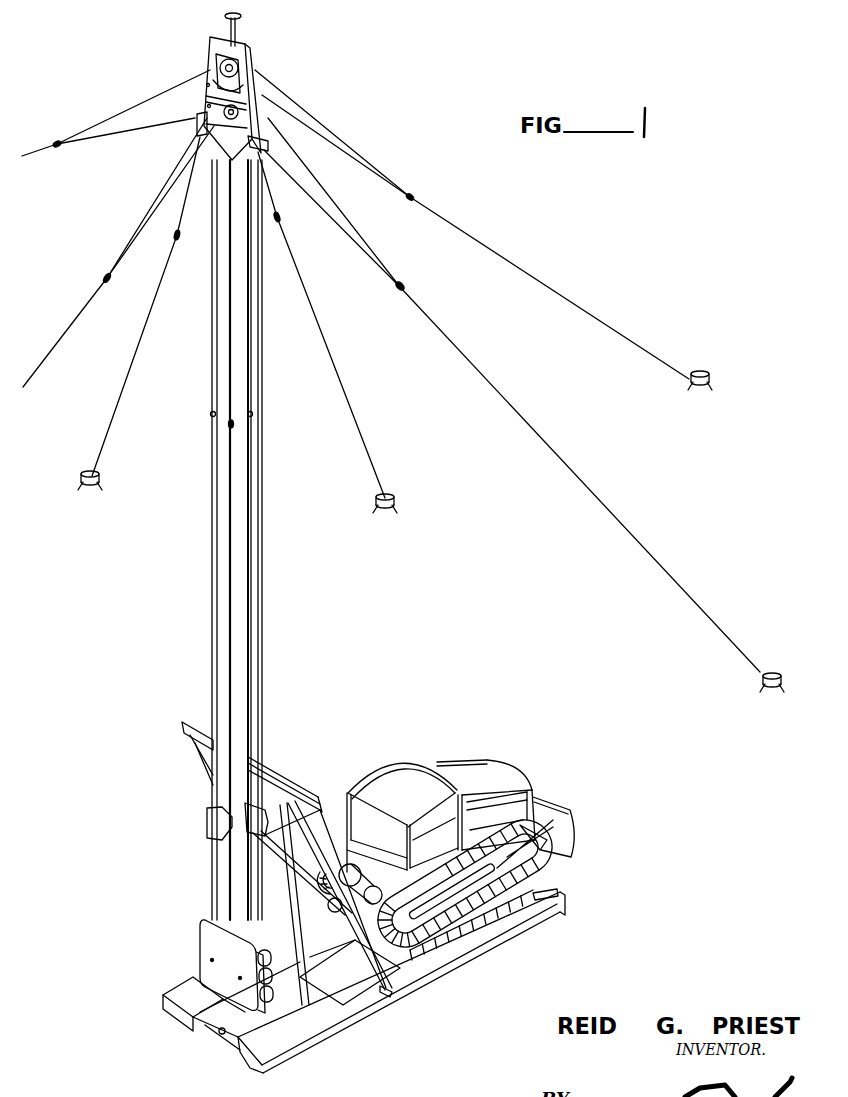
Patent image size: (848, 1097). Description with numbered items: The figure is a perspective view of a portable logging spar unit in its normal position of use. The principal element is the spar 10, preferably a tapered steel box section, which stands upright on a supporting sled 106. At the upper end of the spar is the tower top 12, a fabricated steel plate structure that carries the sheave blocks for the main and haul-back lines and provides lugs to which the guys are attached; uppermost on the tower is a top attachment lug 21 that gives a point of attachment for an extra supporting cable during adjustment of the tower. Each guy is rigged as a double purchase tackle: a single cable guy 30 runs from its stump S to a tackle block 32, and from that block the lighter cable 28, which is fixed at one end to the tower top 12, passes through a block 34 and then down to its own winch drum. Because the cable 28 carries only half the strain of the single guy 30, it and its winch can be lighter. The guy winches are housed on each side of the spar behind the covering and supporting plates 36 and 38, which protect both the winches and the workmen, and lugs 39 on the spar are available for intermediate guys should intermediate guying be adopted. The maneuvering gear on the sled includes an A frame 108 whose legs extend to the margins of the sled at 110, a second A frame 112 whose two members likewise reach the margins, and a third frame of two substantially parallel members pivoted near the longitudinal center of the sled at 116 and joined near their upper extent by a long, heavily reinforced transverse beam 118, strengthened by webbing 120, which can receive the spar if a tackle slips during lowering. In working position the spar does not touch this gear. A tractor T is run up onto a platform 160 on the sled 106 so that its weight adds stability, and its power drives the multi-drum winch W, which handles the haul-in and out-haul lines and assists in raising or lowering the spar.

The spar 10 is at (230, 530).
The tower top 12 is at (257, 68).
The top attachment lug 21 is at (237, 20).
The guy tackle cable 28 is at (125, 249).
The cable guy 30 is at (68, 333).
The tackle block 32 is at (408, 283).
The block 34 is at (283, 193).
The covering and supporting plate 36 is at (210, 941).
The covering and supporting plate 38 is at (274, 953).
The intermediate guy lug 39 is at (212, 416).
The supporting sled 106 is at (420, 975).
The A frame 108 is at (262, 899).
The A frame leg end 110 is at (305, 1007).
The second A frame 112 is at (350, 948).
The frame pivot 116 is at (387, 996).
The transverse beam 118 is at (280, 778).
The webbing 120 is at (320, 822).
The platform 160 is at (472, 920).
The stump S is at (86, 470).
The tractor T is at (490, 772).
The winch W is at (365, 875).